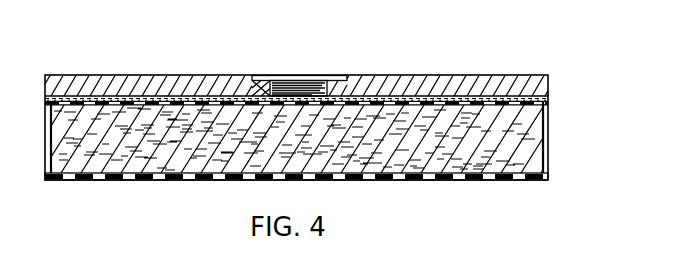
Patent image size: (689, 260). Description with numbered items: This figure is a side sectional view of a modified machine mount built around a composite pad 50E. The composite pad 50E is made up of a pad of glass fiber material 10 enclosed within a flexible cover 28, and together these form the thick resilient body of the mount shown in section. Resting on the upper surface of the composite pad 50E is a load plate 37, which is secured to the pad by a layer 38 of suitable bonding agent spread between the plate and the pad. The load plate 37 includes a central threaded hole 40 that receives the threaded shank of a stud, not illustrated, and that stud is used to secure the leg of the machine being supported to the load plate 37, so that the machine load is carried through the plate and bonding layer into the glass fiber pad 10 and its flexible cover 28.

The pad of glass fiber material 10 is at (537, 141).
The flexible cover 28 is at (133, 178).
The load plate 37 is at (372, 78).
The layer of bonding agent 38 is at (437, 98).
The central threaded hole 40 is at (271, 92).
The composite pad 50E is at (349, 180).